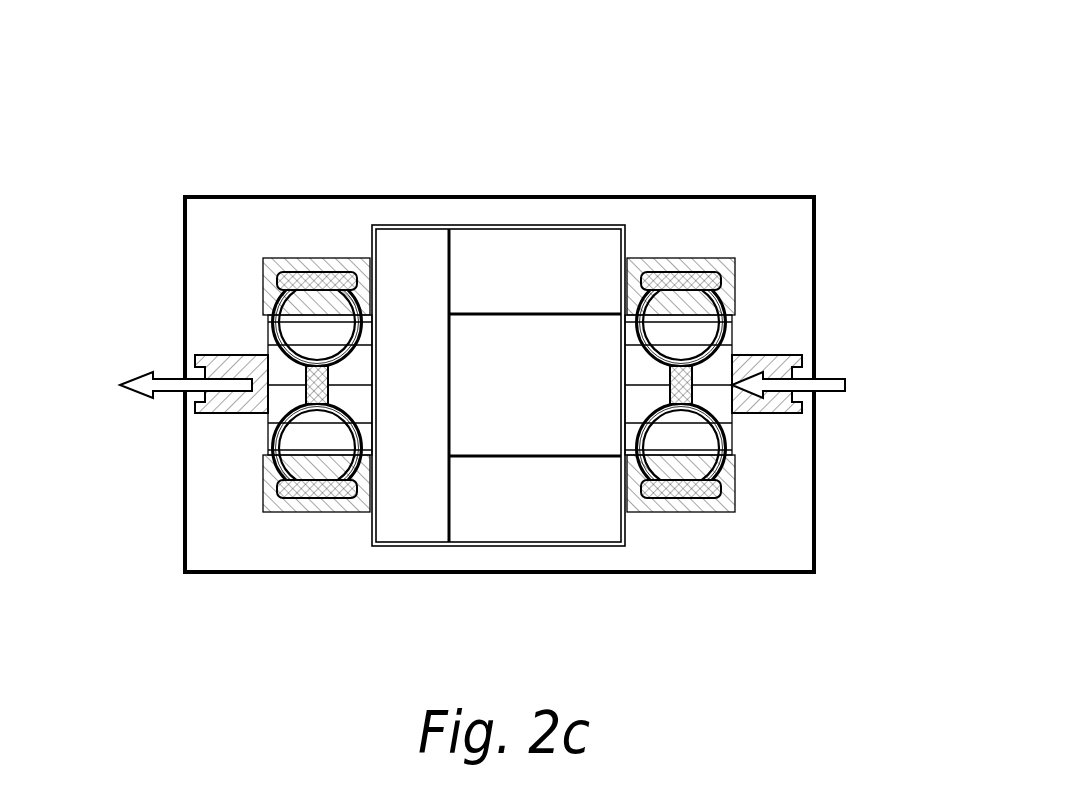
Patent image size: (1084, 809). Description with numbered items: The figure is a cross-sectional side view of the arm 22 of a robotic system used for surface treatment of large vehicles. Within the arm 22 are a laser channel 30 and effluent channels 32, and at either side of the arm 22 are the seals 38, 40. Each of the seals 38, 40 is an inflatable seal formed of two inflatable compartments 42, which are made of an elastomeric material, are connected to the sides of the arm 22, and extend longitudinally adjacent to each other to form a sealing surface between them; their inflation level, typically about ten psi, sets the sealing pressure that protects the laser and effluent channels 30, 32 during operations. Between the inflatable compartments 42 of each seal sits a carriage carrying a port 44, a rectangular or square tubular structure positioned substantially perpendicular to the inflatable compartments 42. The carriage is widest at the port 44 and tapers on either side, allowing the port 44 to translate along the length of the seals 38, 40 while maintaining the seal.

The arm 22 is at (694, 107).
The laser channel 30 is at (537, 407).
The effluent channels 32 is at (512, 267).
The seal 38 is at (715, 367).
The seal 40 is at (283, 367).
The inflatable compartments 42 is at (309, 303).
The port 44 is at (223, 405).